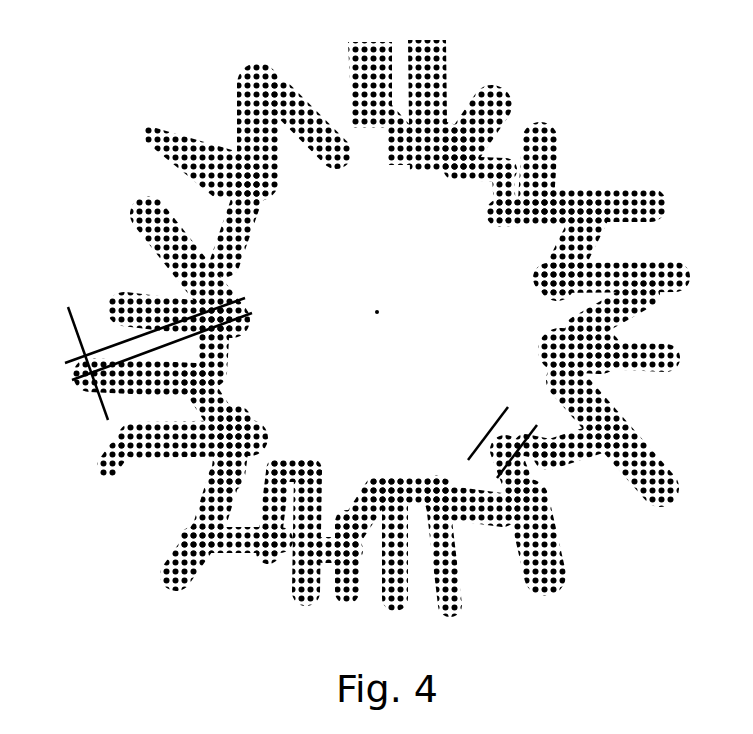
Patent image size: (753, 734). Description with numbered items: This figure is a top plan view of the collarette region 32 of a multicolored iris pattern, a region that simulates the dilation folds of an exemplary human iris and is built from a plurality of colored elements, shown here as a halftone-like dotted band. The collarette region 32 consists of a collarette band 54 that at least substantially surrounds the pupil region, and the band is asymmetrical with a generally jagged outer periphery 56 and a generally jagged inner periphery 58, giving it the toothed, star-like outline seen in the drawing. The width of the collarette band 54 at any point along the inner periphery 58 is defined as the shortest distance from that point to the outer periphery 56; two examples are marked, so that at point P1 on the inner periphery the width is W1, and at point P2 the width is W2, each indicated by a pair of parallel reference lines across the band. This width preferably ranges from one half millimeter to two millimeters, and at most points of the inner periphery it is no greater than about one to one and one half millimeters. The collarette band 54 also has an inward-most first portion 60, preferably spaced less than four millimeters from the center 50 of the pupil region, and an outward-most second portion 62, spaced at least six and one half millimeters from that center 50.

The collarette region 32 is at (369, 366).
The center of the pupil region 50 is at (377, 312).
The collarette band 54 is at (158, 200).
The outer periphery 56 is at (122, 457).
The inner periphery 58 is at (283, 462).
The inward-most portion 60 is at (328, 157).
The outward-most portion 62 is at (172, 582).
The point p1 P1 is at (225, 327).
The point p2 P2 is at (490, 422).
The width w1 W1 is at (63, 363).
The width w2 W2 is at (486, 465).